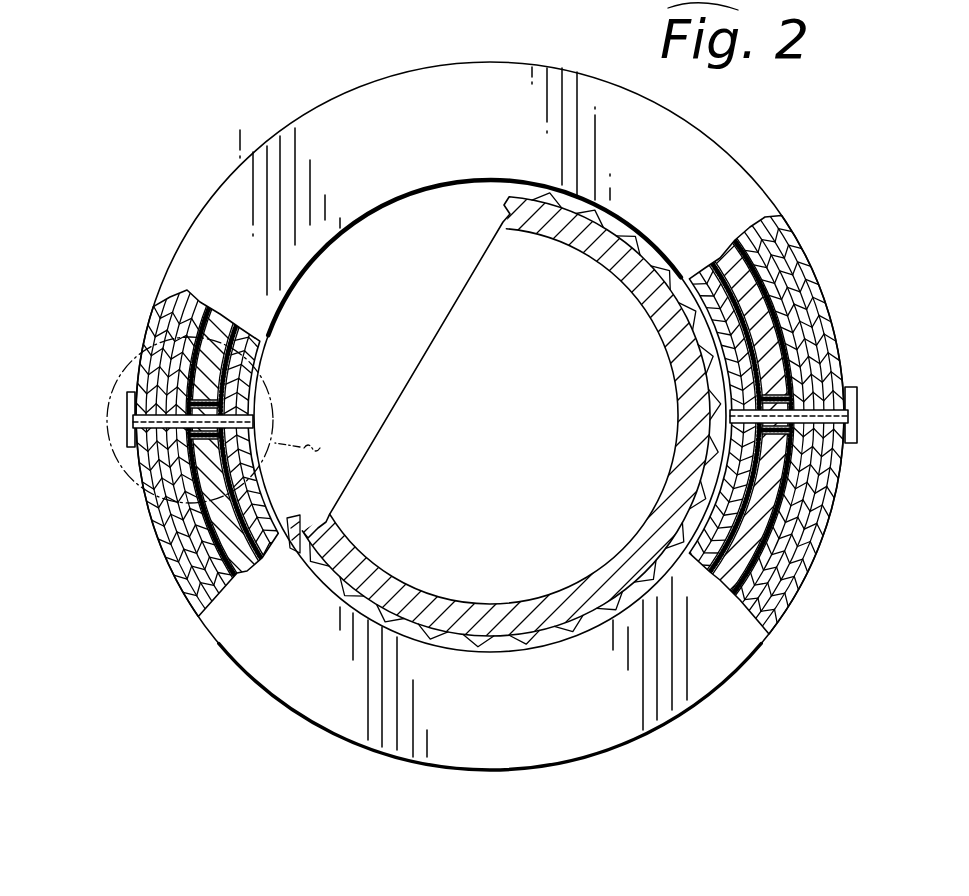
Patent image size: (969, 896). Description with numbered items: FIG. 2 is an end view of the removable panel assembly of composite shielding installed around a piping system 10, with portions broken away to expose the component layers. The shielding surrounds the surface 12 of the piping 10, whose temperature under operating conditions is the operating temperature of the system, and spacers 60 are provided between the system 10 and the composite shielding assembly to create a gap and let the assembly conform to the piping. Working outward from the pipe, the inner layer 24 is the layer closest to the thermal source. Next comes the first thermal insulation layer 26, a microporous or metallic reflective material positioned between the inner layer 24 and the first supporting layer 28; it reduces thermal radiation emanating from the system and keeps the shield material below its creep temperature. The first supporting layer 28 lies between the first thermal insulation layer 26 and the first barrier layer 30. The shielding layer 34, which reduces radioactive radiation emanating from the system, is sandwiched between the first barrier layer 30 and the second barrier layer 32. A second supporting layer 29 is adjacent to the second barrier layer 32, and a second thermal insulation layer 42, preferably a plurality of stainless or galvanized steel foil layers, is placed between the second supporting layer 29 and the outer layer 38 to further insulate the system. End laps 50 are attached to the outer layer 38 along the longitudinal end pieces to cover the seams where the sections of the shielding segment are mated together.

The system 10 is at (640, 274).
The surface of the piping 12 is at (677, 313).
The inner layer 24 is at (418, 186).
The first thermal insulation layer 26 is at (273, 394).
The first supporting layer 28 is at (267, 380).
The second supporting layer 29 is at (185, 290).
The first barrier layer 30 is at (258, 347).
The second barrier layer 32 is at (213, 300).
The shielding layer 34 is at (222, 511).
The outer layer 38 is at (150, 302).
The second thermal insulation layer 42 is at (178, 296).
The end laps 50 is at (120, 398).
The spacers 60 is at (565, 198).